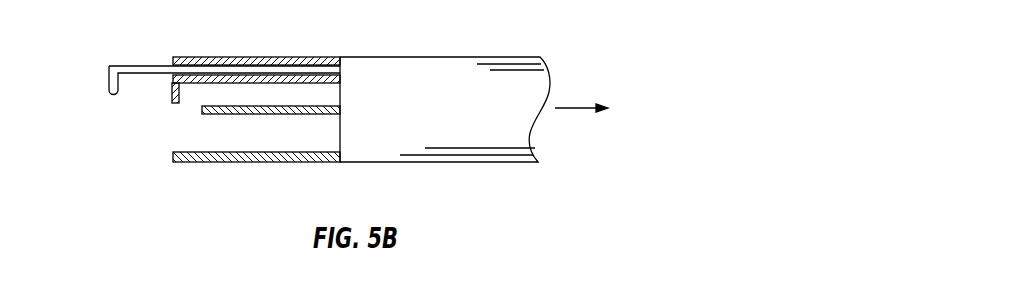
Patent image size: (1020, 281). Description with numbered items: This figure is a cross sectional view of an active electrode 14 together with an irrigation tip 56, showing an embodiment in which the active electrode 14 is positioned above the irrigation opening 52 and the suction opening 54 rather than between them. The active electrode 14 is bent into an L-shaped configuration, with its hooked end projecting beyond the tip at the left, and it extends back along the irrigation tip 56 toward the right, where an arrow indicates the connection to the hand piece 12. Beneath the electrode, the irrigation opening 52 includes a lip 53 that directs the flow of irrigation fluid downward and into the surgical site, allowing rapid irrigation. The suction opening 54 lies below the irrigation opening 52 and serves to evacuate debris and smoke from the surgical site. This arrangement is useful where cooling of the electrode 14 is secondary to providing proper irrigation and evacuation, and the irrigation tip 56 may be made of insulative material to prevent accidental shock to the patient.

The active electrode 14 is at (131, 66).
The lip 53 is at (166, 85).
The irrigation opening 52 is at (200, 99).
The suction opening 54 is at (178, 140).
The irrigation tip 56 is at (428, 57).
The hand piece 12 is at (671, 123).